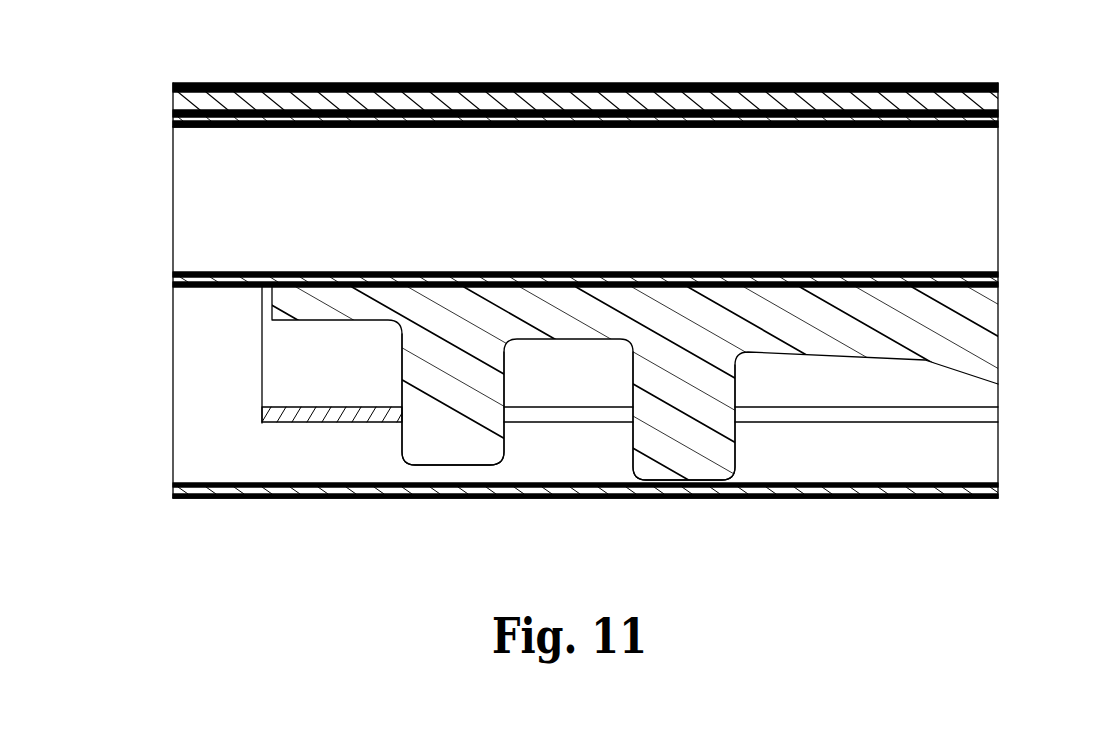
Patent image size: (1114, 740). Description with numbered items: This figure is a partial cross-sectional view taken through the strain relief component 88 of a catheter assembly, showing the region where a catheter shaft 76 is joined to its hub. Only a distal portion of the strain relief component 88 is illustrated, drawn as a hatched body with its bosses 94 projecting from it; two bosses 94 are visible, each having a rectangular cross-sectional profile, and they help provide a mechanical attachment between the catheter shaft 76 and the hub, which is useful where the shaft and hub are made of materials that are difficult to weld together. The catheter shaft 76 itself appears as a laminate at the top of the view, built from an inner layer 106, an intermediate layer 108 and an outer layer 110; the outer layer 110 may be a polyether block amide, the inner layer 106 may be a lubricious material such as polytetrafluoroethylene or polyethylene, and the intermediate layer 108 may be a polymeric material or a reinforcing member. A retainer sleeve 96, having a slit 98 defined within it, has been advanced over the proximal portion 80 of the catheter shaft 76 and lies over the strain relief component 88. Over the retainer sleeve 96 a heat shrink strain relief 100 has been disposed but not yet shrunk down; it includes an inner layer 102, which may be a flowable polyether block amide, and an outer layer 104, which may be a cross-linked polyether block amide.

The catheter shaft 76 is at (193, 127).
The proximal portion 80 is at (432, 158).
The strain relief component 88 is at (977, 330).
The bosses 94 is at (430, 438).
The retainer sleeve 96 is at (290, 412).
The slit 98 is at (550, 413).
The heat shrink strain relief 100 is at (160, 491).
The inner layer 102 is at (918, 483).
The outer layer 104 is at (873, 498).
The inner layer 106 is at (239, 128).
The intermediate layer 108 is at (212, 116).
The outer layer 110 is at (235, 117).